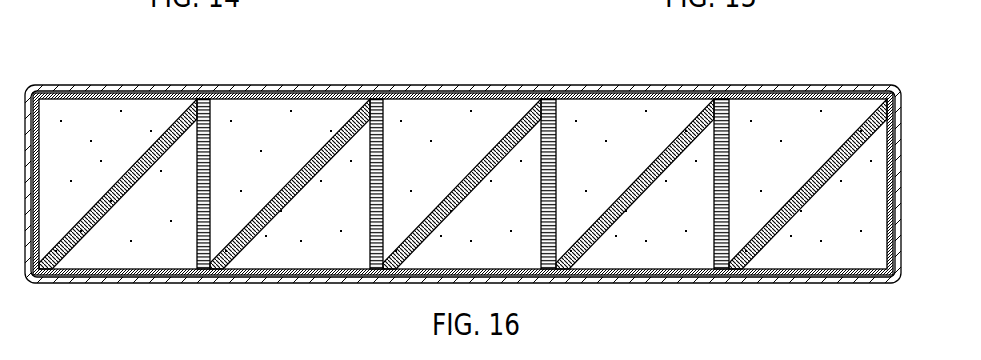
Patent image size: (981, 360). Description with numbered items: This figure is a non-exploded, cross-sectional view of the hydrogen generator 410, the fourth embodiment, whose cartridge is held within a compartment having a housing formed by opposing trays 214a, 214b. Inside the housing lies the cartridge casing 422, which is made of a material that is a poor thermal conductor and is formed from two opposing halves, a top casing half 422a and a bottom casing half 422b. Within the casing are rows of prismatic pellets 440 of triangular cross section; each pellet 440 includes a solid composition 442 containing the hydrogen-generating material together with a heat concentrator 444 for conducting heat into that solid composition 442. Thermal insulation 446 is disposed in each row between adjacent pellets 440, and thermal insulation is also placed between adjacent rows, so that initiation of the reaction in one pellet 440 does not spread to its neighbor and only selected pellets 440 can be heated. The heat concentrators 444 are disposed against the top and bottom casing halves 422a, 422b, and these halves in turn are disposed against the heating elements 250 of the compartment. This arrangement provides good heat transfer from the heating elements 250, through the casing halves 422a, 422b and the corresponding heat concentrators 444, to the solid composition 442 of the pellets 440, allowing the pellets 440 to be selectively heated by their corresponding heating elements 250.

The hydrogen generator 410 is at (838, 50).
The cartridge casing 422 is at (848, 88).
The top casing half 422a is at (755, 95).
The bottom casing half 422b is at (778, 278).
The tray 214a is at (677, 88).
The tray 214b is at (693, 283).
The heat concentrator 444 is at (57, 93).
The pellet 440 is at (234, 97).
The thermal insulation 446 is at (317, 148).
The solid composition 442 is at (148, 222).
The heating element 250 is at (620, 97).